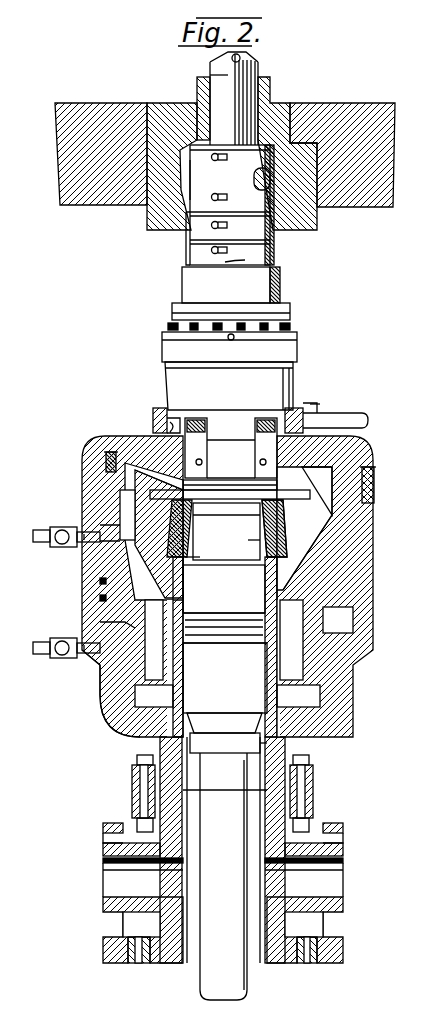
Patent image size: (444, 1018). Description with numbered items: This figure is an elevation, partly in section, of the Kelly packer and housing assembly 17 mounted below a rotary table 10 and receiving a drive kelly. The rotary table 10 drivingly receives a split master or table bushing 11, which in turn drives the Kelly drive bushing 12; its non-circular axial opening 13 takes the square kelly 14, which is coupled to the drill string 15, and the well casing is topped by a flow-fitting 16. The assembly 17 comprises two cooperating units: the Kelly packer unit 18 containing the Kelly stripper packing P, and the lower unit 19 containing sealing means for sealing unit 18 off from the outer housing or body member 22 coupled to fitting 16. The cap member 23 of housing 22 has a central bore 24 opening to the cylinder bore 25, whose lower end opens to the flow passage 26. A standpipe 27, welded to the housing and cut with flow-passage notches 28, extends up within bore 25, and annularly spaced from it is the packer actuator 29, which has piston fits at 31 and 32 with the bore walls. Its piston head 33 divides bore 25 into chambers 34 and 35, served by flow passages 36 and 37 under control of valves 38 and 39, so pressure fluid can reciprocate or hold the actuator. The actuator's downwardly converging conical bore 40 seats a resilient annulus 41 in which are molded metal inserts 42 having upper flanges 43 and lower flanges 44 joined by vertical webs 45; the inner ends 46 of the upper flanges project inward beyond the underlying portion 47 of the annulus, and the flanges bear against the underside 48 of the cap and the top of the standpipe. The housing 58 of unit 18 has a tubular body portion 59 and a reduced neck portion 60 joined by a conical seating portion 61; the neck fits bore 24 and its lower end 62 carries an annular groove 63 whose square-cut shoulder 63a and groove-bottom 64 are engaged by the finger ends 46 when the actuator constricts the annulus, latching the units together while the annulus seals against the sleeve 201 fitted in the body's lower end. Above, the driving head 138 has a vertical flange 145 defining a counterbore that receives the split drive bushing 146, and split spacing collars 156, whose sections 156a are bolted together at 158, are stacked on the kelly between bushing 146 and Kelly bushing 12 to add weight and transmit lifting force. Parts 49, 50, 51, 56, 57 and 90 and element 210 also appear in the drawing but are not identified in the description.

The rotary table 10 is at (122, 100).
The master or table bushing 11 is at (156, 110).
The Kelly drive bushing 12 is at (282, 106).
The axial opening 13 is at (210, 75).
The kelly 14 is at (258, 66).
The drill string 15 is at (247, 992).
The flow-fitting 16 is at (343, 850).
The assembly 17 is at (325, 404).
The Kelly packer unit 18 is at (152, 359).
The unit 19 is at (96, 738).
The housing or body member 22 is at (373, 622).
The cap member 23 is at (108, 438).
The central bore 24 is at (190, 462).
The cylinder bore 25 is at (310, 703).
The flow passage 26 is at (270, 748).
The standpipe 27 is at (278, 645).
The flow-passage notches 28 is at (170, 703).
The packer actuator 29 is at (323, 565).
The piston fit 31 is at (100, 598).
The piston fit 32 is at (118, 522).
The piston head 33 is at (100, 582).
The chamber 34 is at (95, 652).
The chamber 35 is at (112, 560).
The flow passage 36 is at (100, 618).
The flow passage 37 is at (252, 183).
The valve 38 is at (52, 648).
The valve 39 is at (50, 532).
The conical bore 40 is at (183, 574).
The annulus 41 is at (332, 520).
The metal inserts 42 is at (156, 534).
The upper plates or flanges 43 is at (305, 486).
The lower plates or flanges 44 is at (185, 557).
The vertical webs 45 is at (250, 546).
The inner ends 46 is at (230, 482).
The underlying portion 47 is at (185, 498).
The underside 48 is at (170, 485).
The packer body 49 is at (196, 528).
The housing bottom 50 is at (120, 697).
The bolt 51 is at (136, 422).
The collar 56 is at (160, 410).
The pipe 57 is at (330, 420).
The housing 58 is at (154, 375).
The tubular body portion 59 is at (295, 372).
The neck portion 60 is at (246, 467).
The conical portion 61 is at (174, 412).
The lower end 62 is at (284, 528).
The annular groove 63 is at (214, 500).
The shoulder 63a is at (258, 508).
The groove-bottom 64 is at (230, 480).
The slot 90 is at (143, 650).
The driving head 138 is at (284, 306).
The vertical flange 145 is at (281, 284).
The drive bushing 146 is at (182, 270).
The split spacing collars 156 is at (280, 253).
The sections 156a is at (246, 170).
The bolts 158 is at (250, 263).
The sleeve 201 is at (228, 540).
The packer element 210 is at (242, 590).
The Kelly stripper packing P is at (225, 698).